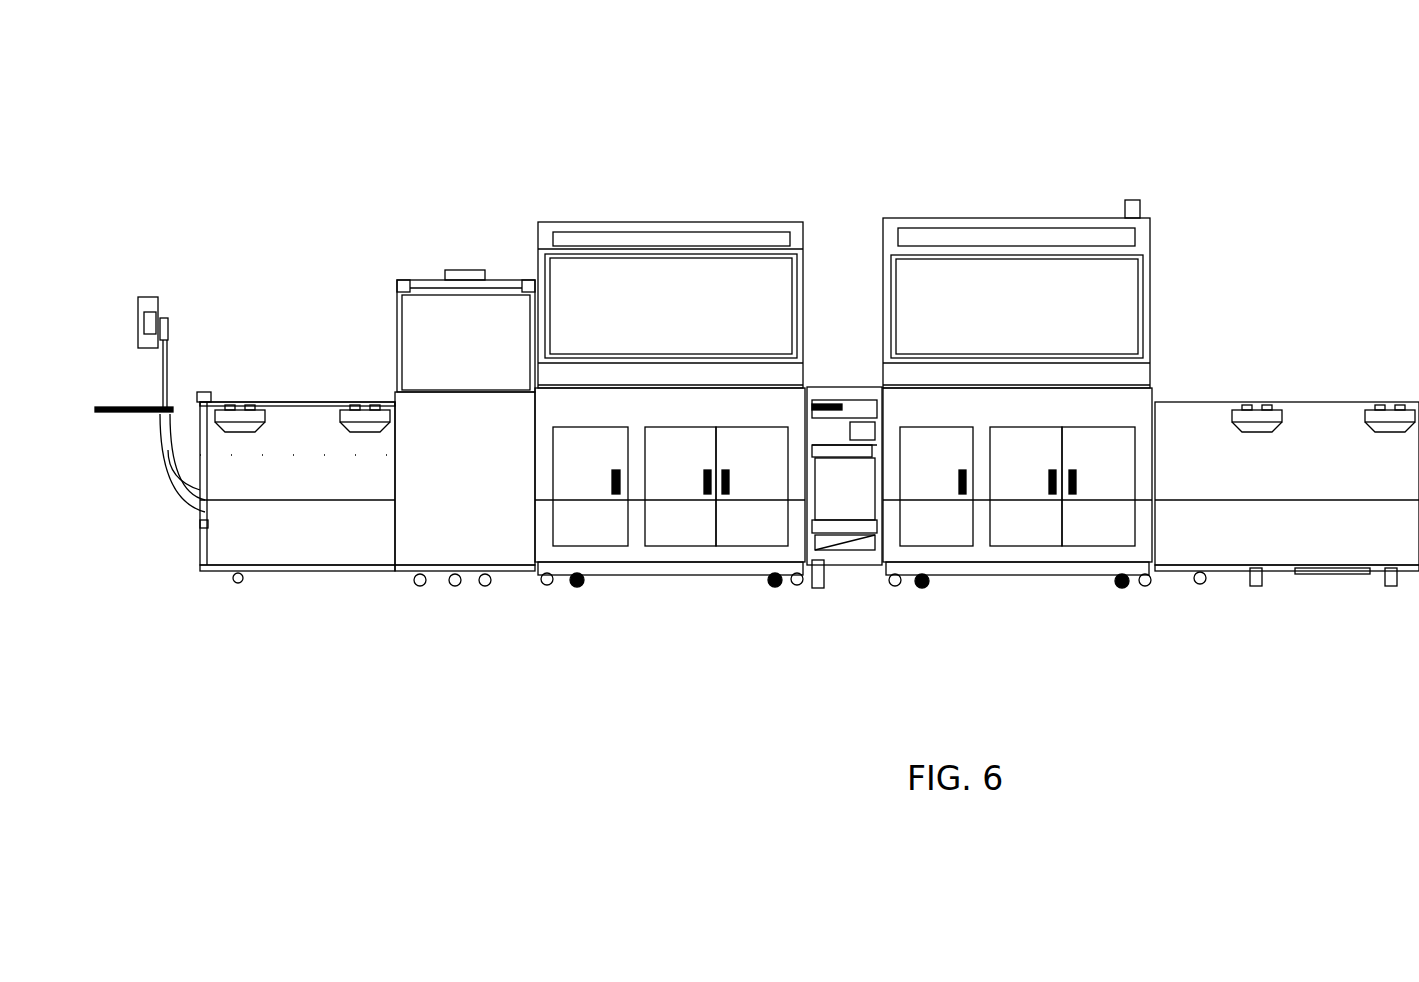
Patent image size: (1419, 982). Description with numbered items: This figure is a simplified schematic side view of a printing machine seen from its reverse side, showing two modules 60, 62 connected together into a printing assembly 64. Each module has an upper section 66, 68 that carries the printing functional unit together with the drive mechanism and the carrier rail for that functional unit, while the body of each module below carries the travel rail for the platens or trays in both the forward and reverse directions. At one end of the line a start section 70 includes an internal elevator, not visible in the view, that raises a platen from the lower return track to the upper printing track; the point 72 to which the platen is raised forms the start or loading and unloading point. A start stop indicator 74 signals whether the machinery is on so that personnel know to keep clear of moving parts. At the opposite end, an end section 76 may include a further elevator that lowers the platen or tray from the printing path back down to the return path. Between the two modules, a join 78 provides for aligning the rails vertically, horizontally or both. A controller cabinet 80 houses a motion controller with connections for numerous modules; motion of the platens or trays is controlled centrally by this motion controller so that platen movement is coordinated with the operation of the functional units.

The module 60 is at (973, 352).
The module 62 is at (400, 415).
The printing assembly 64 is at (701, 178).
The upper section 66 is at (1068, 298).
The upper section 68 is at (593, 298).
The start section 70 is at (287, 510).
The point 72 is at (320, 398).
The start stop indicator 74 is at (147, 297).
The end section 76 is at (1268, 440).
The join 78 is at (853, 480).
The controller cabinet 80 is at (489, 333).